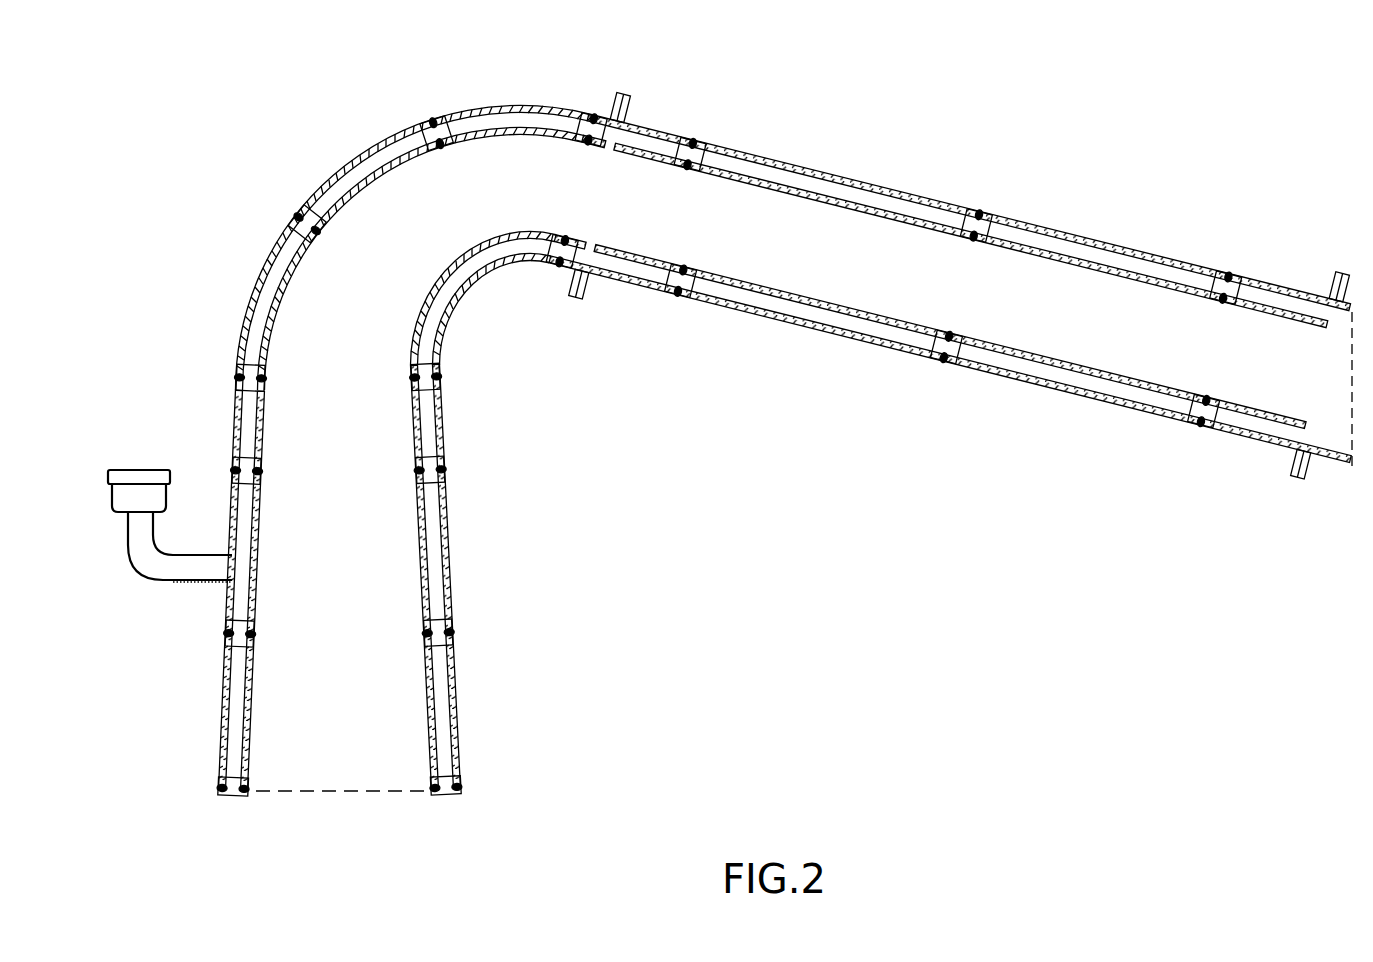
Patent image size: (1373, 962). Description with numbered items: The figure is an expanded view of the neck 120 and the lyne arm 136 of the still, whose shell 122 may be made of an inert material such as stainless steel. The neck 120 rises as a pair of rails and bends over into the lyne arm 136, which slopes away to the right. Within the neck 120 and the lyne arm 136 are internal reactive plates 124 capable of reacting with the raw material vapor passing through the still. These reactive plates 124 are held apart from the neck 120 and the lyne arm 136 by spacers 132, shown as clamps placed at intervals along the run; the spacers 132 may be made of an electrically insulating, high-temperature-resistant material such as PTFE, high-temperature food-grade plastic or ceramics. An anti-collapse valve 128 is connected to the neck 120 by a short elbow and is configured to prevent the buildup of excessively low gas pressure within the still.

The neck 120 is at (450, 574).
The shell 122 is at (513, 110).
The internal reactive plate 124 is at (400, 172).
The anti-collapse valve 128 is at (143, 483).
The spacer 132 is at (298, 205).
The lyne arm 136 is at (843, 184).